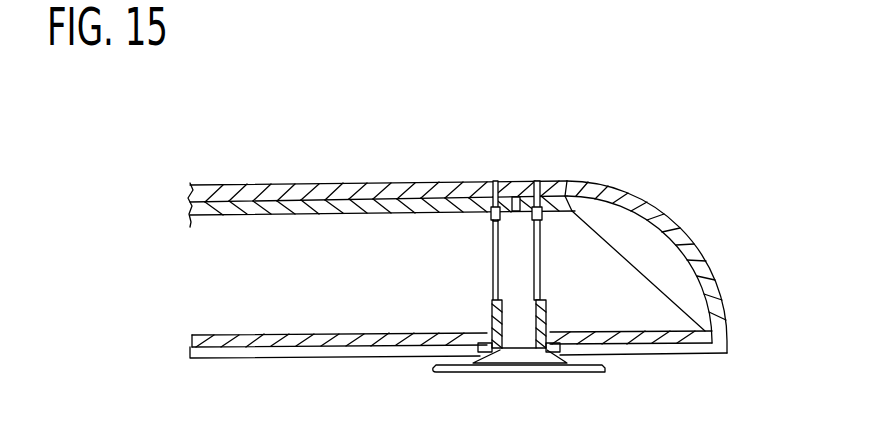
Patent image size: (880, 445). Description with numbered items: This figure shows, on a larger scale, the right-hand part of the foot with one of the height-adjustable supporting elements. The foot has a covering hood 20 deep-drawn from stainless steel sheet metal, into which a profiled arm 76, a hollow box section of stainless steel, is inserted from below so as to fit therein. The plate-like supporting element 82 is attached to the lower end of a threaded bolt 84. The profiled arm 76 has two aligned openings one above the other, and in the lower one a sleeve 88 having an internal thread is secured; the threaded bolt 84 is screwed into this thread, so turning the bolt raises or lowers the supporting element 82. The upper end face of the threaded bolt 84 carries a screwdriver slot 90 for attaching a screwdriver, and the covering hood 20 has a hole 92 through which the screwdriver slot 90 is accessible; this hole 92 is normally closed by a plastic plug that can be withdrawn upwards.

The covering hood 20 is at (306, 194).
The profiled arm 76 is at (213, 205).
The hole 92 is at (496, 182).
The threaded bolt 84 is at (493, 247).
The screwdriver slot 90 is at (515, 207).
The sleeve 88 is at (493, 300).
The height-adjustable supporting element 82 is at (603, 373).